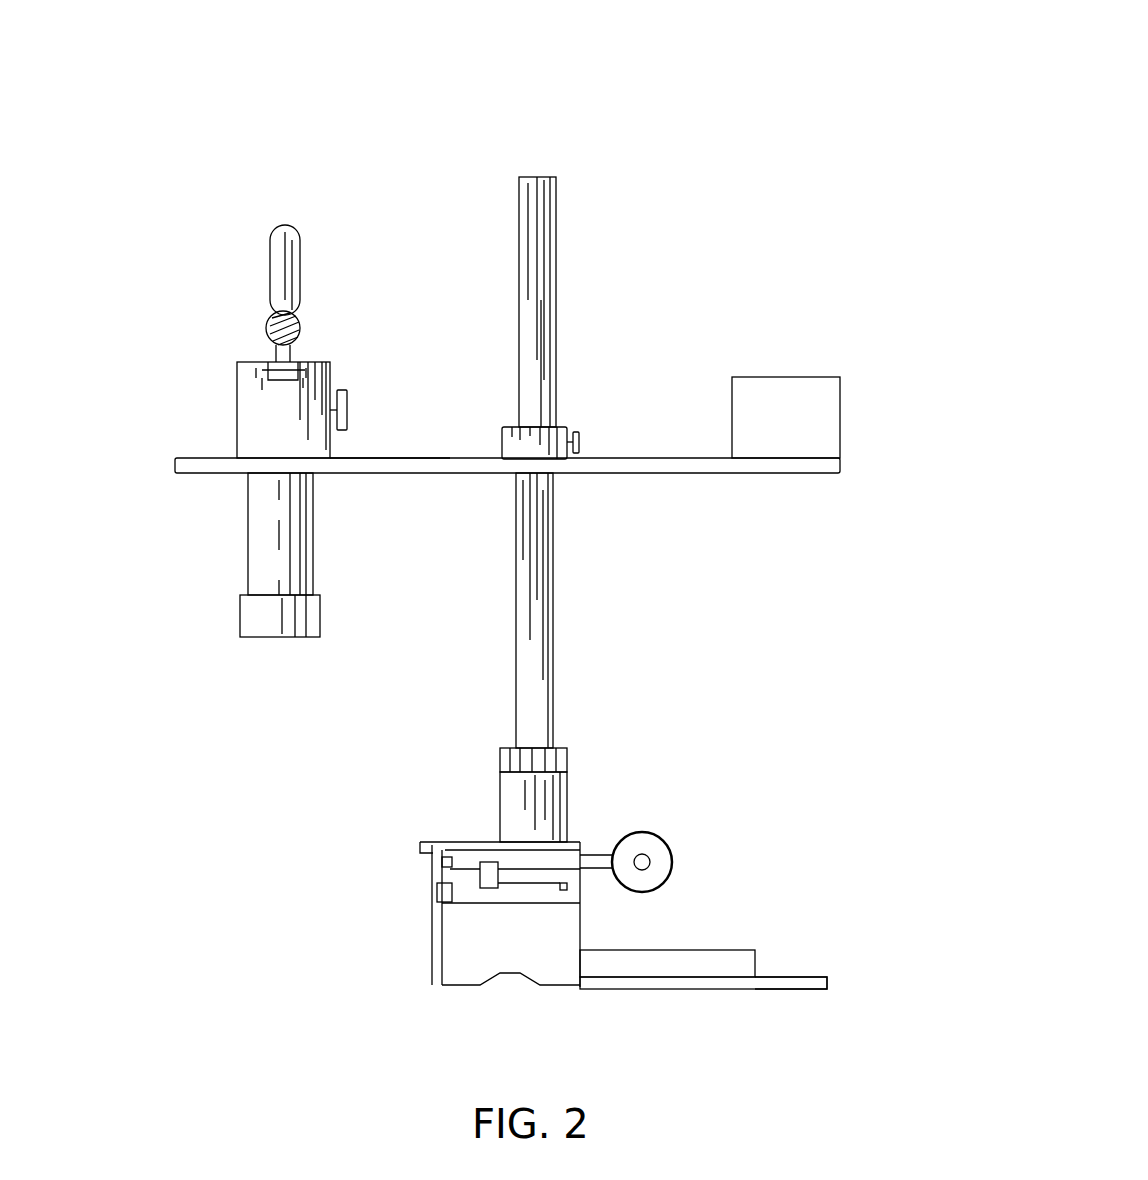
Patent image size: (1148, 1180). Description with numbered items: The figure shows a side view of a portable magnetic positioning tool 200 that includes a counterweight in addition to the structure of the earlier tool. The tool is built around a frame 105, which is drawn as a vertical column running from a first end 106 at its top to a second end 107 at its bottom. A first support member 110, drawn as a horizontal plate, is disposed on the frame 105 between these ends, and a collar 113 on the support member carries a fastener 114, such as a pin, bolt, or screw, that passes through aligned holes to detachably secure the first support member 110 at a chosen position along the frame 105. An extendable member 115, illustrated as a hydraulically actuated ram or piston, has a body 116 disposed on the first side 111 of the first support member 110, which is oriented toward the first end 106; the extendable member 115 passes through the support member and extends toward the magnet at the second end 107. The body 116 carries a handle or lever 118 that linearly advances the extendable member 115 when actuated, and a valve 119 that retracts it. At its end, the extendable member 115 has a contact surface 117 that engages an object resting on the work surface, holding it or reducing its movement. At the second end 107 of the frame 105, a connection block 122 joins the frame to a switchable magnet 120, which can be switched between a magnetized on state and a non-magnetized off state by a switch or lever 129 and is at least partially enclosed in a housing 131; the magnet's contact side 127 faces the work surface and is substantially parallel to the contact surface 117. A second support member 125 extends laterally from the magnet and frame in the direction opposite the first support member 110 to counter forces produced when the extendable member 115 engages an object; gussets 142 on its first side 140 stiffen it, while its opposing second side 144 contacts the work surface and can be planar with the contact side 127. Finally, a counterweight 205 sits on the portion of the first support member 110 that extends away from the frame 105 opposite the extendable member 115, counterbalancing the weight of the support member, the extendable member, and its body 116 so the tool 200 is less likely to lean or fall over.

The portable magnetic positioning tool 200 is at (766, 121).
The first end 106 is at (537, 177).
The frame 105 is at (553, 605).
The collar 113 is at (502, 443).
The fastener 114 is at (580, 443).
The first support member 110 is at (175, 463).
The first side 111 is at (385, 458).
The counterweight 205 is at (780, 377).
The handle or lever 118 is at (290, 225).
The body 116 is at (237, 407).
The valve 119 is at (341, 390).
The extendable member 115 is at (248, 535).
The contact surface 117 is at (257, 637).
The second end 107 is at (503, 748).
The connection block 122 is at (500, 795).
The switchable magnet 120 is at (580, 840).
The switch or lever 129 is at (672, 850).
The housing 131 is at (432, 935).
The contact side 127 is at (455, 985).
The gusset 142 is at (713, 950).
The first side 140 is at (805, 977).
The second support member 125 is at (828, 978).
The second side 144 is at (652, 1018).